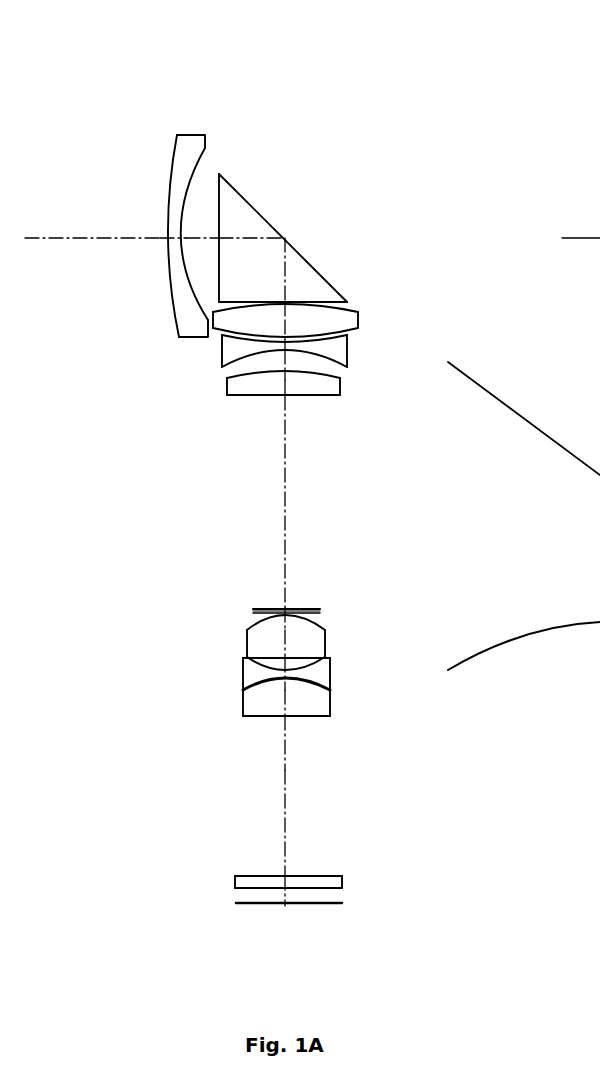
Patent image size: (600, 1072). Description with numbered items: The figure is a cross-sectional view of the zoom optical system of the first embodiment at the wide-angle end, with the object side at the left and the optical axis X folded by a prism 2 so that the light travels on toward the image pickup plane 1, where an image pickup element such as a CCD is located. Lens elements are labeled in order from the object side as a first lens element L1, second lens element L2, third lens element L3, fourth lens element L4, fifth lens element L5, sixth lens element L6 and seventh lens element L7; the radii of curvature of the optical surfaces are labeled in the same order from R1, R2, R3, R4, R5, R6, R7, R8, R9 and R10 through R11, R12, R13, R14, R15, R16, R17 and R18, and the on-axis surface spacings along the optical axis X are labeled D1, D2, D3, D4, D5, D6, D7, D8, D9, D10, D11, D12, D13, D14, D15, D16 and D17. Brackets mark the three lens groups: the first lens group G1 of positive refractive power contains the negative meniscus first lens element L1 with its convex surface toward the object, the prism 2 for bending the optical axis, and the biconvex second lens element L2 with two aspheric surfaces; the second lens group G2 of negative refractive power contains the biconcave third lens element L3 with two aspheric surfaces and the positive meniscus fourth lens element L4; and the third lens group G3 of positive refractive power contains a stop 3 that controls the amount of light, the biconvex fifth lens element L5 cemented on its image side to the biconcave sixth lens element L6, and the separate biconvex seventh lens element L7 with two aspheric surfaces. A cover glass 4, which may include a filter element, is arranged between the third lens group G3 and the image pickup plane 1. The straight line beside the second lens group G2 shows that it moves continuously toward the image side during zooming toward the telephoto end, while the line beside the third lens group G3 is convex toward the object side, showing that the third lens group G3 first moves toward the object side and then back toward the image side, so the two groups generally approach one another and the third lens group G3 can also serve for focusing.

The optical axis X is at (43, 239).
The image pickup plane 1 is at (252, 902).
The prism 2 is at (226, 251).
The stop 3 is at (280, 584).
The cover glass 4 is at (298, 875).
The first lens group G1 is at (422, 308).
The second lens group G2 is at (412, 398).
The third lens group G3 is at (422, 717).
The first lens element L1 is at (153, 209).
The second lens element L2 is at (272, 346).
The third lens element L3 is at (283, 392).
The fourth lens element L4 is at (312, 414).
The fifth lens element L5 is at (280, 625).
The sixth lens element L6 is at (286, 705).
The seventh lens element L7 is at (316, 729).
The radius of curvature R1 is at (168, 222).
The radius of curvature R2 is at (184, 215).
The radius of curvature R3 is at (219, 213).
The radius of curvature R4 is at (182, 338).
The radius of curvature R5 is at (214, 338).
The radius of curvature R6 is at (232, 357).
The radius of curvature R7 is at (340, 396).
The radius of curvature R8 is at (270, 358).
The radius of curvature R9 is at (315, 396).
The radius of curvature R10 is at (258, 380).
The radius of curvature R11 is at (295, 612).
The radius of curvature R12 is at (248, 612).
The radius of curvature R13 is at (272, 662).
The radius of curvature R14 is at (327, 703).
The radius of curvature R15 is at (270, 677).
The radius of curvature R16 is at (273, 718).
The radius of curvature R17 is at (298, 877).
The radius of curvature R18 is at (313, 888).
The on-axis surface spacing D1 is at (170, 251).
The on-axis surface spacing D2 is at (202, 251).
The on-axis surface spacing D3 is at (252, 251).
The on-axis surface spacing D4 is at (292, 318).
The on-axis surface spacing D5 is at (302, 318).
The on-axis surface spacing D6 is at (313, 318).
The on-axis surface spacing D7 is at (303, 400).
The on-axis surface spacing D8 is at (262, 378).
The on-axis surface spacing D9 is at (295, 405).
The on-axis surface spacing D10 is at (283, 505).
The on-axis surface spacing D11 is at (325, 618).
The on-axis surface spacing D12 is at (255, 627).
The on-axis surface spacing D13 is at (243, 672).
The on-axis surface spacing D14 is at (270, 697).
The on-axis surface spacing D15 is at (295, 720).
The on-axis surface spacing D16 is at (285, 801).
The on-axis surface spacing D17 is at (278, 872).